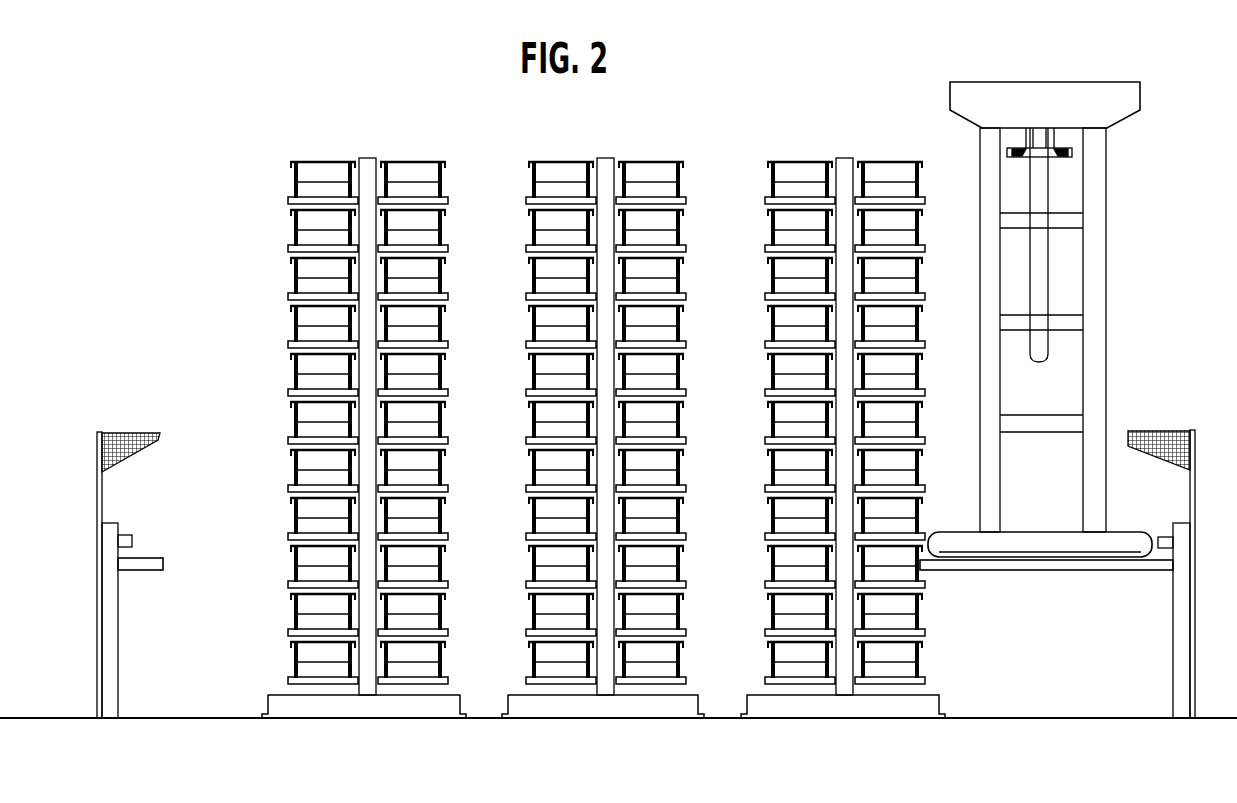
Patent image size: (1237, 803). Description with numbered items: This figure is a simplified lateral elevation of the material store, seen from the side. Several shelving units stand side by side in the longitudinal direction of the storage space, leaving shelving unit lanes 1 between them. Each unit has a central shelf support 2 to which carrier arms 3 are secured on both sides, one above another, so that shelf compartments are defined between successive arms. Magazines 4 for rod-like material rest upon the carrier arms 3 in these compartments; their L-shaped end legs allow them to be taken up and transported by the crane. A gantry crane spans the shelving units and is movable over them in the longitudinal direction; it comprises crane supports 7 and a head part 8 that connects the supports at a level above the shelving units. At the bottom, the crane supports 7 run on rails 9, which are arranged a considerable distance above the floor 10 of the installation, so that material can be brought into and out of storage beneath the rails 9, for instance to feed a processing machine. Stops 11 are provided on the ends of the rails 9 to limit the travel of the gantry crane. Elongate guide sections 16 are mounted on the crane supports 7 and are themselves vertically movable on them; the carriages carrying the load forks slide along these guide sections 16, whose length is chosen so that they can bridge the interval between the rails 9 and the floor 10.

The shelving unit lane 1 is at (586, 405).
The shelf support 2 is at (369, 168).
The carrier arm 3 is at (298, 243).
The magazine 4 is at (300, 315).
The crane support 7 is at (1095, 245).
The head part 8 is at (1128, 100).
The rail 9 is at (1092, 565).
The floor 10 is at (190, 720).
The stop 11 is at (1165, 540).
The guide section 16 is at (1040, 290).